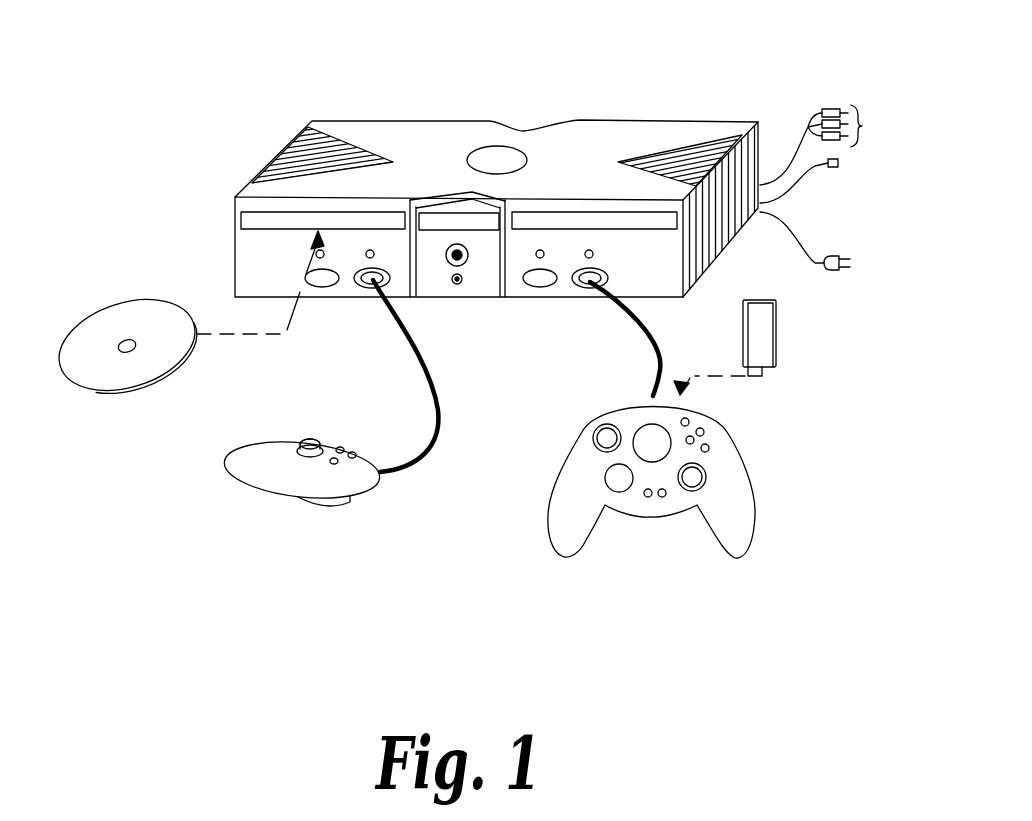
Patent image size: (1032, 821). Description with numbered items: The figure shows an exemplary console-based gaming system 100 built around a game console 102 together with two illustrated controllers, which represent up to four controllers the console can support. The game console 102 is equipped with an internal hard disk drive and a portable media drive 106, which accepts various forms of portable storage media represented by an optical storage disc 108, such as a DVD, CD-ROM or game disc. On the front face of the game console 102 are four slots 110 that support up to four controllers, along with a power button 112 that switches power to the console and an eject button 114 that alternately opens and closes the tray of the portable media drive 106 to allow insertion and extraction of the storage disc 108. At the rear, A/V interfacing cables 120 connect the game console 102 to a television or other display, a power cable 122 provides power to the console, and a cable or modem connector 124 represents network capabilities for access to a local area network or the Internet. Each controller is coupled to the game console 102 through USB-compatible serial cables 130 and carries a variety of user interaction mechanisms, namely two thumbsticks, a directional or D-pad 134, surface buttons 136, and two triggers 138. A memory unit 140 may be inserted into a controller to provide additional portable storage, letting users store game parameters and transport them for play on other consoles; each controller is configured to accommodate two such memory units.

The console-based gaming system 100 is at (652, 32).
The game console 102 is at (352, 121).
The portable media drive 106 is at (250, 218).
The optical storage disc 108 is at (135, 396).
The slots 110 is at (369, 289).
The power button 112 is at (458, 284).
The eject button 114 is at (456, 244).
The A/V interfacing cables 120 is at (828, 107).
The power cable 122 is at (830, 272).
The cable or modem connector 124 is at (803, 183).
The serial cables 130 is at (438, 384).
The directional or D-pad 134 is at (604, 477).
The surface buttons 136 is at (704, 433).
The triggers 138 is at (352, 503).
The memory unit 140 is at (777, 331).